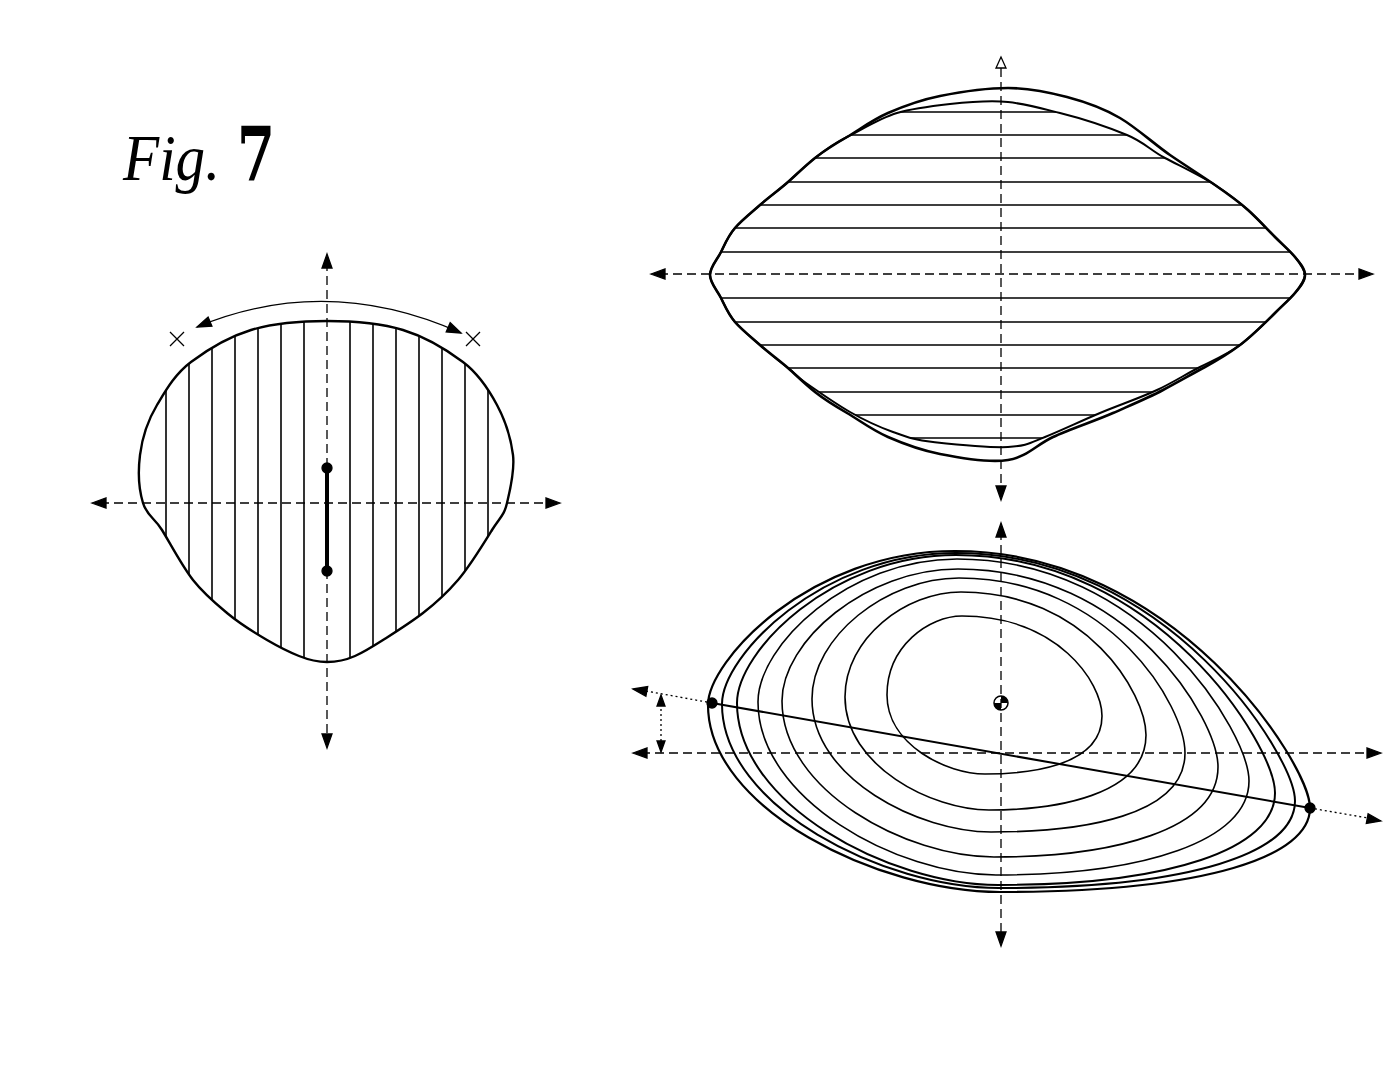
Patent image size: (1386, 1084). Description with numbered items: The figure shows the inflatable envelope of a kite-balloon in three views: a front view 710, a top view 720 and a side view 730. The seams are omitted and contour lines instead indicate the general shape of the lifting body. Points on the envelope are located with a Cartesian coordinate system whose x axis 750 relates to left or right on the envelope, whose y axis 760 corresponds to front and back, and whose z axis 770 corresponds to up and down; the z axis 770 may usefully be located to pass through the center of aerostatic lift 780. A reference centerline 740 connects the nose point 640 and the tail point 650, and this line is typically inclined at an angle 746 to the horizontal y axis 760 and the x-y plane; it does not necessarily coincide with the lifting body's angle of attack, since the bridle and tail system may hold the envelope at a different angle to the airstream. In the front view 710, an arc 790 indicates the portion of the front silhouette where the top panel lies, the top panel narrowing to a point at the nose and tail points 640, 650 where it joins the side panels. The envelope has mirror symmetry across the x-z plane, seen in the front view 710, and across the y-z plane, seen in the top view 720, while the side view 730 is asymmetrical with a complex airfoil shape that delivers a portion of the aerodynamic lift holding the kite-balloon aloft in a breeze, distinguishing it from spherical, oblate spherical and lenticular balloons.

The front view 710 is at (172, 648).
The top view 720 is at (1263, 171).
The side view 730 is at (761, 851).
The reference centerline 740 is at (1007, 755).
The angle 746 is at (655, 721).
The x axis 750 is at (527, 505).
The y axis 760 is at (692, 280).
The z axis 770 is at (329, 718).
The center of aerostatic lift 780 is at (993, 702).
The arc 790 is at (416, 309).
The nose point 640 is at (330, 466).
The tail point 650 is at (333, 574).